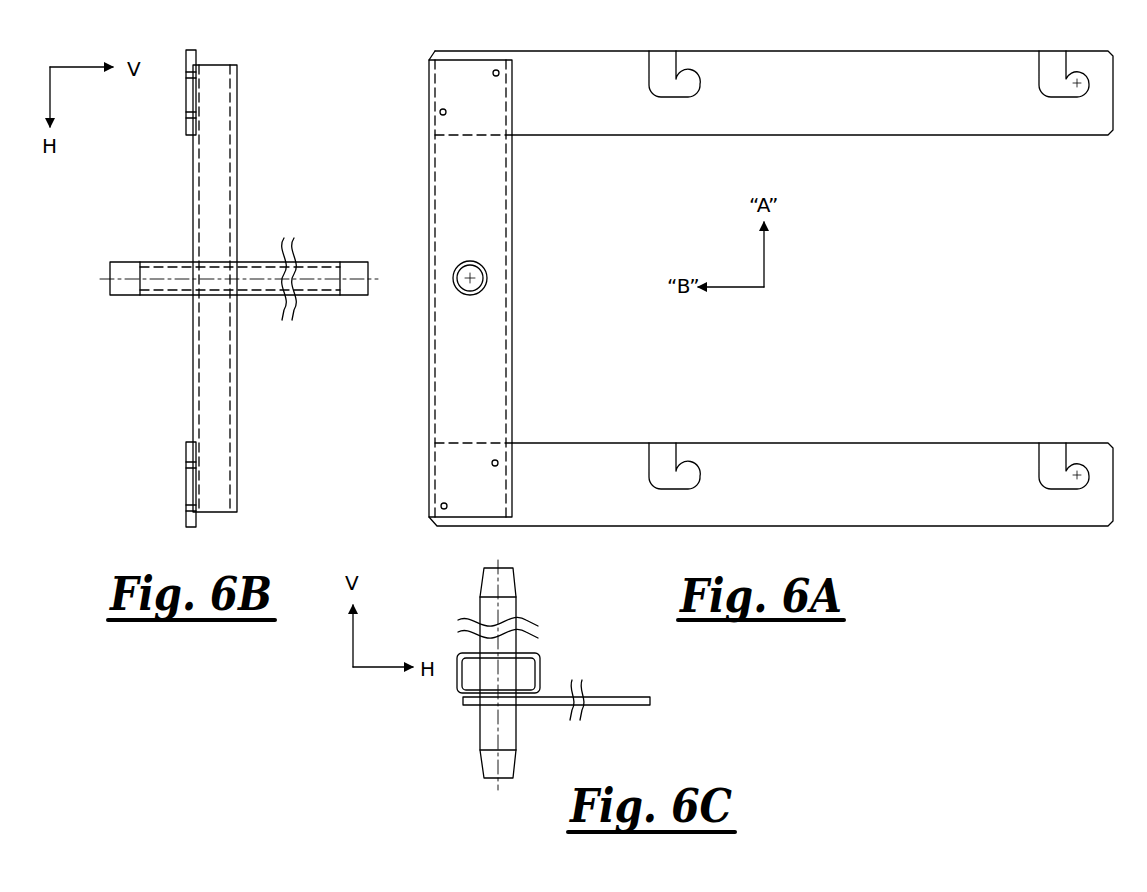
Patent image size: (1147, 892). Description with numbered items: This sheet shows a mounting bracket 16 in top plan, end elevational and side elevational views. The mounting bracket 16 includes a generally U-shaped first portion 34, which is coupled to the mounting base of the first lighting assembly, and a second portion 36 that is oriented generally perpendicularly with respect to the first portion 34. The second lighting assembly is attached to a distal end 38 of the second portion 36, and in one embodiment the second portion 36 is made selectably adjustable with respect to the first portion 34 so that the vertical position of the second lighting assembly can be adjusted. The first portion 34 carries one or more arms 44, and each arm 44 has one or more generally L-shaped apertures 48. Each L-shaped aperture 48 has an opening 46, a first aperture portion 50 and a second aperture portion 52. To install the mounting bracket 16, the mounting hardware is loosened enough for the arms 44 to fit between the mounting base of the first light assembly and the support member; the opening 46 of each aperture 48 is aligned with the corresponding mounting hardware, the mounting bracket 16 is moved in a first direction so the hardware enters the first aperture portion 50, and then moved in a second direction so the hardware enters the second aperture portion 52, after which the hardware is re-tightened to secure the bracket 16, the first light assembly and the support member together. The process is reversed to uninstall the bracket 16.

In FIG. 6A, the mounting bracket 16 is at (786, 323).
In FIG. 6B, the mounting bracket 16 is at (225, 288).
In FIG. 6C, the mounting bracket 16 is at (555, 686).
In FIG. 6A, the first portion 34 is at (786, 264).
In FIG. 6B, the first portion 34 is at (233, 288).
In FIG. 6C, the first portion 34 is at (591, 682).
In FIG. 6A, the second portion 36 is at (487, 273).
In FIG. 6B, the second portion 36 is at (248, 260).
In FIG. 6C, the second portion 36 is at (516, 586).
In FIG. 6B, the distal end 38 is at (345, 298).
In FIG. 6A, the arm 44 is at (841, 137).
In FIG. 6B, the arm 44 is at (186, 98).
In FIG. 6C, the arm 44 is at (620, 694).
In FIG. 6A, the opening 46 is at (667, 52).
In FIG. 6A, the L-shaped aperture 48 is at (699, 80).
In FIG. 6A, the first aperture portion 50 is at (665, 67).
In FIG. 6A, the second aperture portion 52 is at (680, 88).